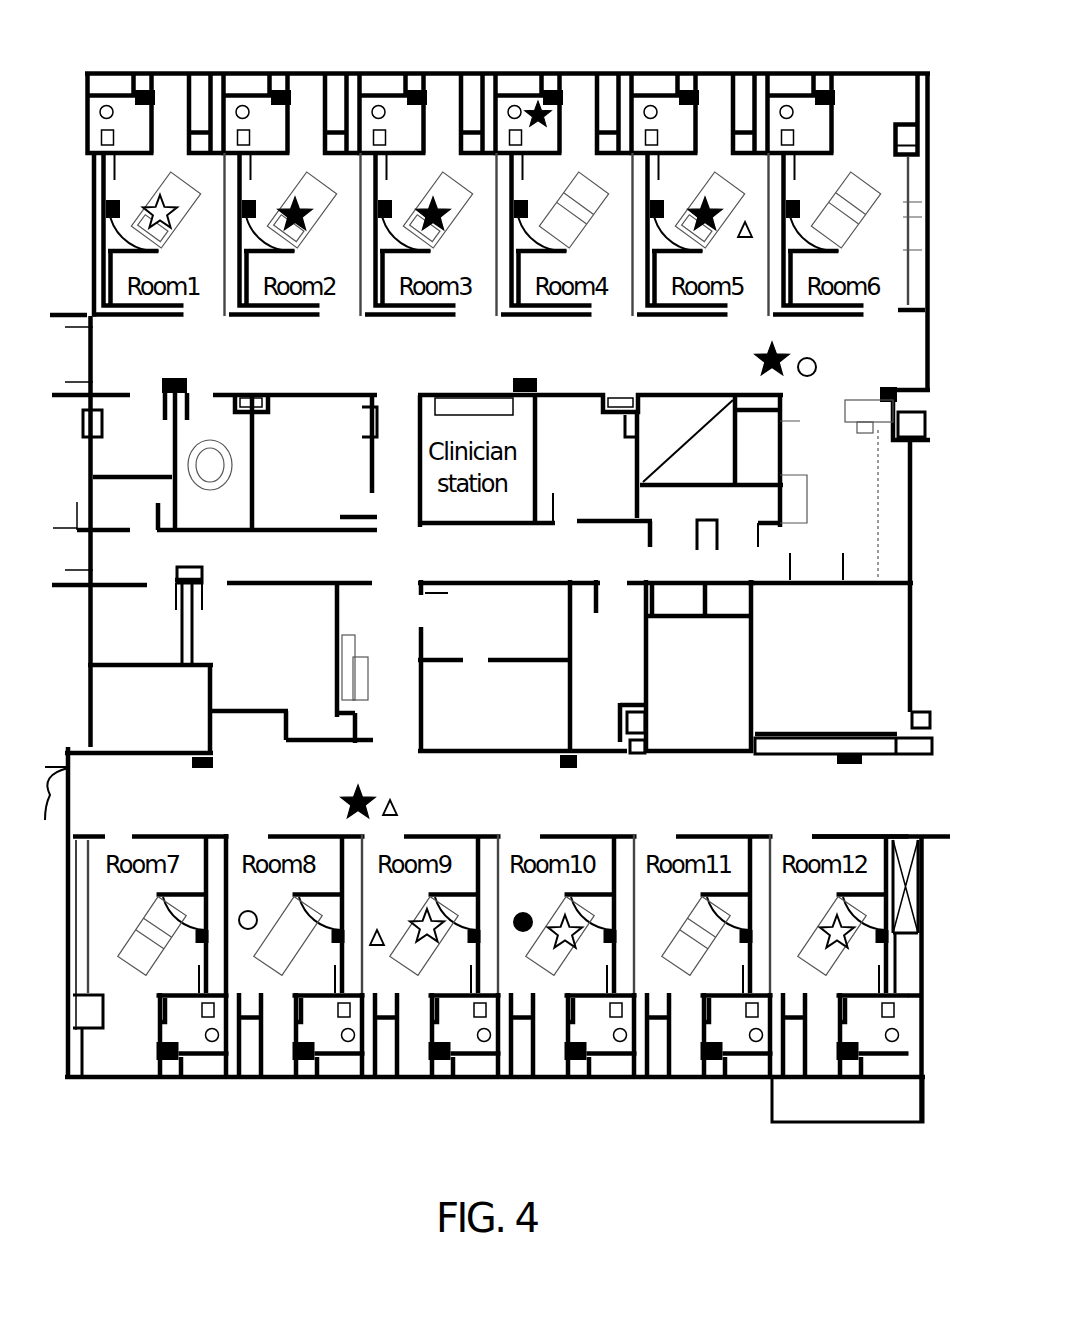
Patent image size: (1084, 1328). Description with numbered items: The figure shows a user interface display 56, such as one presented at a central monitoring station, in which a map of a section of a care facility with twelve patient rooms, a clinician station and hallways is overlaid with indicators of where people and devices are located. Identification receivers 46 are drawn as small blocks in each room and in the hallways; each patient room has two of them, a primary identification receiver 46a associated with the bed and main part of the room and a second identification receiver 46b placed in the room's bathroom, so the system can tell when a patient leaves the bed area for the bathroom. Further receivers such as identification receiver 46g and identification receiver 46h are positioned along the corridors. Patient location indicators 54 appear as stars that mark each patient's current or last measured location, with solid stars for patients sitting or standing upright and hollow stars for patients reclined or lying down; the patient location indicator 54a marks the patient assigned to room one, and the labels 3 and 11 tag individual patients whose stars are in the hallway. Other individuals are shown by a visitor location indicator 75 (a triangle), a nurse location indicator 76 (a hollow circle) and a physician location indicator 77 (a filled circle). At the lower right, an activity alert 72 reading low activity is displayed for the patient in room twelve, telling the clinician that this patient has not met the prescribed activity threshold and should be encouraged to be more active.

The identification receiver 46b is at (145, 90).
The patient location indicator 54a is at (165, 197).
The identification receiver 46 is at (281, 90).
The patient location indicator 54 is at (298, 200).
The visitor location indicator 75 is at (745, 221).
The user interface display 56 is at (932, 78).
The primary identification receiver 46a is at (106, 206).
The patient 3 is at (770, 350).
The nurse location indicator 76 is at (817, 366).
The identification receiver 46g is at (201, 768).
The patient 11 is at (347, 795).
The identification receiver 46h is at (568, 768).
The physician location indicator 77 is at (523, 933).
The activity alert 72 is at (848, 1123).